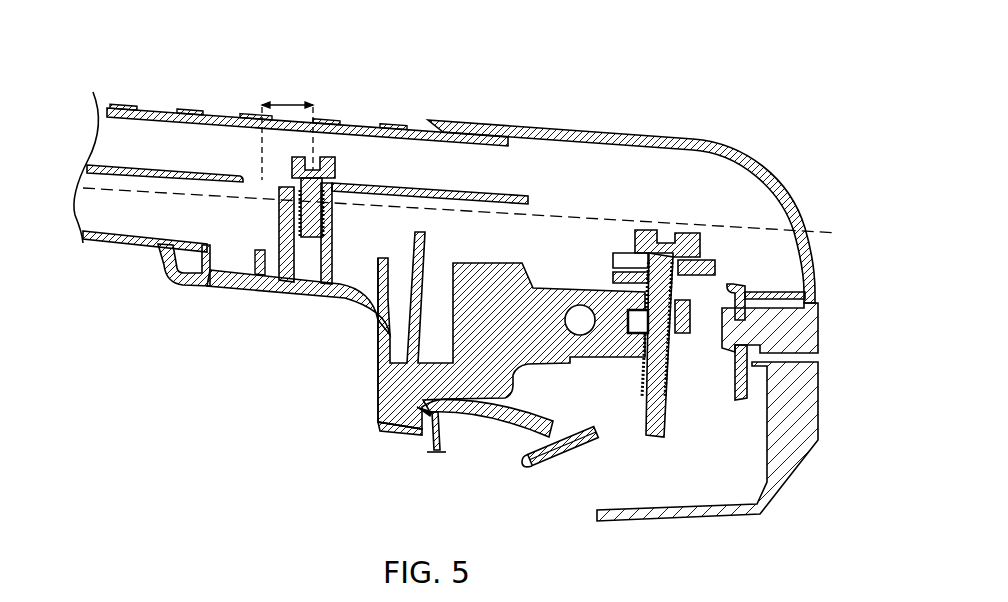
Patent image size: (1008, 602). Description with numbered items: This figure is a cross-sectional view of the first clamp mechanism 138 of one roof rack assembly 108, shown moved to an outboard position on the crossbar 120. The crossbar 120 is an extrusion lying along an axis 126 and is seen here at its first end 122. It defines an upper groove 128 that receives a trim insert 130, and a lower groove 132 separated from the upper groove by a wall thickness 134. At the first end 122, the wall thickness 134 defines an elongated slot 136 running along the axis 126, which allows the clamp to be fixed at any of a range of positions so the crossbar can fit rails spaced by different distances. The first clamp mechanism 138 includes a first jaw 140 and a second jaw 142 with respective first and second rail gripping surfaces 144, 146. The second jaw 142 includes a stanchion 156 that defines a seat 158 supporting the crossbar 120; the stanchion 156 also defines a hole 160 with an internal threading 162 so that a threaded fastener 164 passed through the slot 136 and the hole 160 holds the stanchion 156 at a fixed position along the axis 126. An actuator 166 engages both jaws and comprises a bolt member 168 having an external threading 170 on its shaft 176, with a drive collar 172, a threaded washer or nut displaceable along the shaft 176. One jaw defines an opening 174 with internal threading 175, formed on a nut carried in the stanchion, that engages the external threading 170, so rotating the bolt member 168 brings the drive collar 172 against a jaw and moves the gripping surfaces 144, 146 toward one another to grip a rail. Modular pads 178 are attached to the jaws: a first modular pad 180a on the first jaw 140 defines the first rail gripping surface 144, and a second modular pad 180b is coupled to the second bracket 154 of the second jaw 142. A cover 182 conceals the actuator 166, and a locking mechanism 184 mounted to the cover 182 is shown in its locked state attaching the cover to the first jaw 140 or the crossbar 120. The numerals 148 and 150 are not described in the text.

The assembly 108 is at (100, 62).
The crossbar 120 is at (117, 243).
The first end 122 is at (465, 202).
The axis 126 is at (825, 228).
The upper groove 128 is at (465, 202).
The trim insert 130 is at (170, 114).
The lower groove 132 is at (465, 202).
The wall thickness 134 is at (393, 184).
The elongated slot 136 is at (245, 165).
The first clamp mechanism 138 is at (335, 422).
The first jaw 140 is at (513, 330).
The second jaw 142 is at (343, 343).
The first rail gripping surface 144 is at (563, 420).
The second rail gripping surface 146 is at (442, 423).
The latch body washer 148 is at (612, 280).
The retaining hook 150 is at (733, 288).
The second bracket 154 is at (578, 453).
The stanchion 156 is at (375, 407).
The seat 158 is at (163, 240).
The hole 160 is at (240, 259).
The internal threading 162 is at (283, 213).
The threaded fastener 164 is at (325, 160).
The actuator 166 is at (692, 316).
The bolt member 168 is at (692, 316).
The external threading 170 is at (692, 316).
The drive collar 172 is at (712, 260).
The opening 174 is at (635, 250).
The internal threading 175 is at (673, 352).
The shaft 176 is at (645, 230).
The modular pad 178 is at (442, 472).
The first modular pad 180a is at (528, 470).
The second modular pad 180b is at (383, 437).
The cover 182 is at (807, 450).
The locking mechanism 184 is at (820, 328).